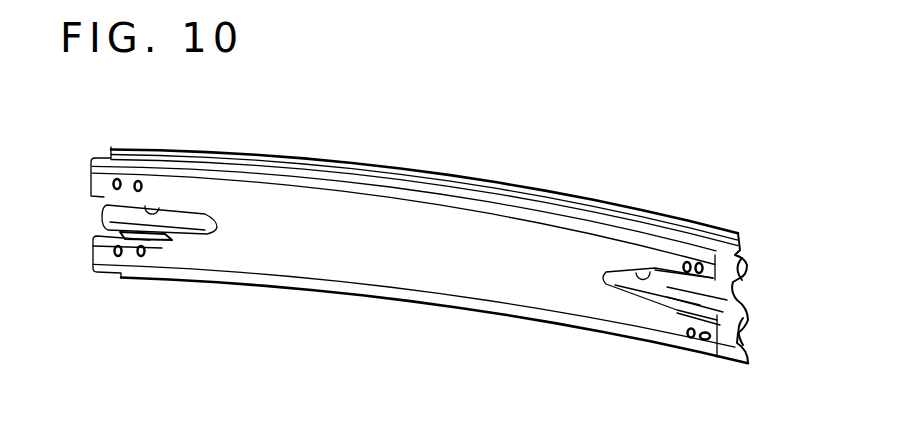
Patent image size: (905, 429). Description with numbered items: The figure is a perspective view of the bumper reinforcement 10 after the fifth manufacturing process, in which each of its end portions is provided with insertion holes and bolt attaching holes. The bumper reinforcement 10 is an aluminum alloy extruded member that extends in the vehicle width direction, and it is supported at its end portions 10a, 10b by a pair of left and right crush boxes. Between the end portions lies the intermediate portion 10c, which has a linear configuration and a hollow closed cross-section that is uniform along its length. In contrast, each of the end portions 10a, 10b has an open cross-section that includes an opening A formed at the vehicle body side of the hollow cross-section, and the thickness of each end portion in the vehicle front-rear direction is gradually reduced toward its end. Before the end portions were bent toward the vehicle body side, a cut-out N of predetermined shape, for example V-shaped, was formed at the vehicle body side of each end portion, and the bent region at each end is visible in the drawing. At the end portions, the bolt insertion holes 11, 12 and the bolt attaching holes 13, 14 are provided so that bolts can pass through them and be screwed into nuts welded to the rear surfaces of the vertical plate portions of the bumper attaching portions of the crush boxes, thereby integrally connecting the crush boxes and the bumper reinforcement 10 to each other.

The bumper reinforcement 10 is at (467, 170).
The end portion 10a is at (157, 257).
The end portion 10b is at (672, 250).
The intermediate portion 10c is at (409, 278).
The bolt insertion hole 11 is at (151, 232).
The bolt insertion hole 12 is at (747, 318).
The bolt attaching hole 13 is at (136, 252).
The bolt attaching hole 14 is at (706, 339).
The cut-out N is at (152, 207).
The opening A is at (172, 220).